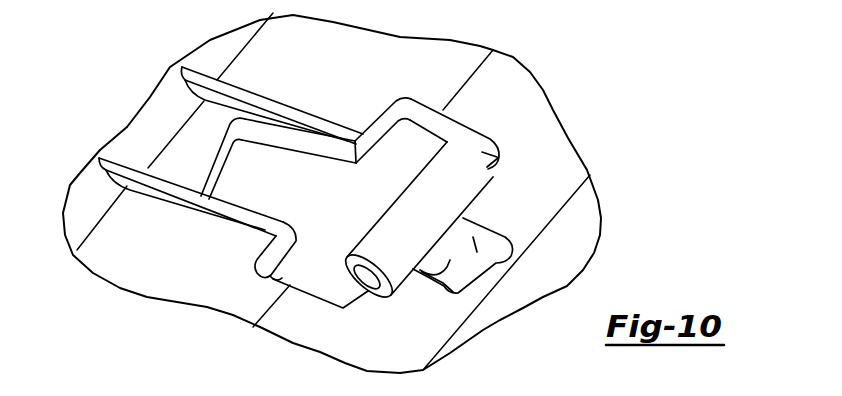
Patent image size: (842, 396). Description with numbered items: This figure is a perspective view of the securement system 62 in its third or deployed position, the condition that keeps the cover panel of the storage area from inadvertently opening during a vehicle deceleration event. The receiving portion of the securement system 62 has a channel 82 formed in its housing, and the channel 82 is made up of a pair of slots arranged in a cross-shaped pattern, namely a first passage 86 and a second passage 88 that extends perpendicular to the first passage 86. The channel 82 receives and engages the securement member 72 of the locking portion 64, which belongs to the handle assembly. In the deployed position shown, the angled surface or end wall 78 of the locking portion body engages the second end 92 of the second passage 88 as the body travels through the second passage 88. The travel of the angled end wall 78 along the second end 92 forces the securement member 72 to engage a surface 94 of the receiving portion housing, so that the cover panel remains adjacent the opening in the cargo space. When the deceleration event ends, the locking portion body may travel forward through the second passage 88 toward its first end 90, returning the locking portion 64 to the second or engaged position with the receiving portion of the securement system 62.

The securement system 62 is at (581, 56).
The surface of the receiving portion housing 94 is at (552, 152).
The channel 82 is at (316, 177).
The first passage 86 is at (427, 117).
The second passage 88 is at (302, 143).
The first end of the second passage 90 is at (203, 172).
The locking portion 64 is at (430, 237).
The securement member 72 is at (460, 182).
The second end of the second passage 92 is at (476, 249).
The end wall 78 is at (447, 261).